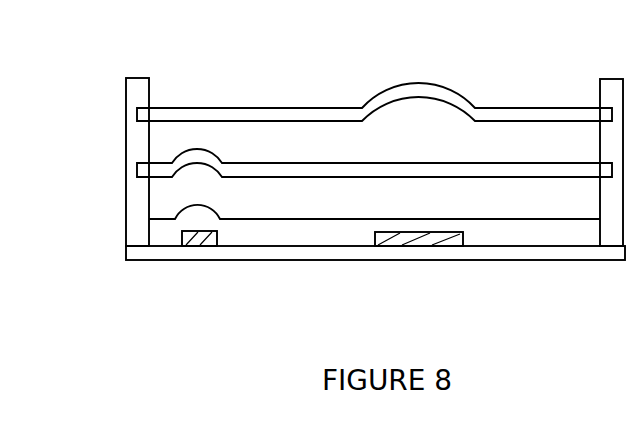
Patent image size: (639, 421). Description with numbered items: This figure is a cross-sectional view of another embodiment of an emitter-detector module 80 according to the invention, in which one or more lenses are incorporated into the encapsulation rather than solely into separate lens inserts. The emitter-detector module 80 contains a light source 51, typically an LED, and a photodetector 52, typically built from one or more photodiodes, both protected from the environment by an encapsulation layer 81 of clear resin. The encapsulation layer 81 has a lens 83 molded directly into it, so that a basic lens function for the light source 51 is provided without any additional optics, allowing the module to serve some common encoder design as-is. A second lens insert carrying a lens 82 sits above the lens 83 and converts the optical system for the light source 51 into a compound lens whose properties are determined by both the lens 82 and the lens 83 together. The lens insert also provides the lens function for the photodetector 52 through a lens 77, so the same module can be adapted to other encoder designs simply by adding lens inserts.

The emitter-detector module 80 is at (97, 61).
The lens 77 is at (442, 75).
The lens 82 is at (210, 180).
The lens 83 is at (188, 212).
The encapsulation layer 81 is at (310, 233).
The light source 51 is at (188, 246).
The photodetector 52 is at (390, 243).